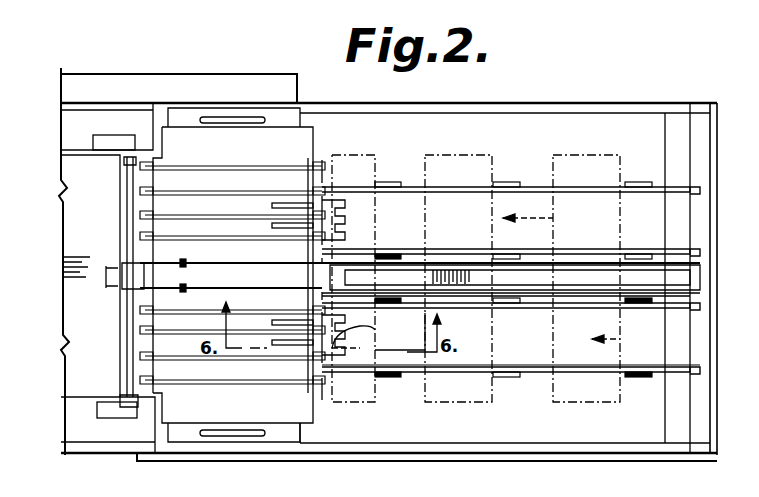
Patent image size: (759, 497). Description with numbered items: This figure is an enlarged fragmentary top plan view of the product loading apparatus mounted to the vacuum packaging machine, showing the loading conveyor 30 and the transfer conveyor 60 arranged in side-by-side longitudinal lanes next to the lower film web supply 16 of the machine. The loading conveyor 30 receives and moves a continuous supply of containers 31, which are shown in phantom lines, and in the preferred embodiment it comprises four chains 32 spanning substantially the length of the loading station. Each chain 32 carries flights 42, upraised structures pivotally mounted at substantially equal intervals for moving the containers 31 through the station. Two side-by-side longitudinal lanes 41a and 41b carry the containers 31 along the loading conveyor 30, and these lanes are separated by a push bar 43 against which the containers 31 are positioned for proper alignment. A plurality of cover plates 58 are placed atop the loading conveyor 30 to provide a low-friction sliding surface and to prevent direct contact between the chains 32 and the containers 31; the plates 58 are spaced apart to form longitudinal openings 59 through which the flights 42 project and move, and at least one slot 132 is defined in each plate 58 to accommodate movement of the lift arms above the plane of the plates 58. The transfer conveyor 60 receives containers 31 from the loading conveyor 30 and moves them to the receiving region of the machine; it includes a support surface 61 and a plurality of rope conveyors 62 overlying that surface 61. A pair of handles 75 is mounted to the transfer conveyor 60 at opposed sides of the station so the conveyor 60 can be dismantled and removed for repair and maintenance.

The lower film web supply 16 is at (70, 216).
The loading conveyor 30 is at (636, 98).
The containers 31 is at (350, 156).
The chains 32 is at (658, 184).
The longitudinal lane 41a is at (630, 332).
The longitudinal lane 41b is at (565, 214).
The flights 42 is at (517, 182).
The push bar 43 is at (620, 276).
The cover plate 58 is at (617, 432).
The longitudinal openings 59 is at (412, 374).
The transfer conveyor 60 is at (303, 102).
The support surface 61 is at (248, 136).
The rope conveyors 62 is at (220, 378).
The handles 75 is at (207, 120).
The slot 132 is at (400, 331).